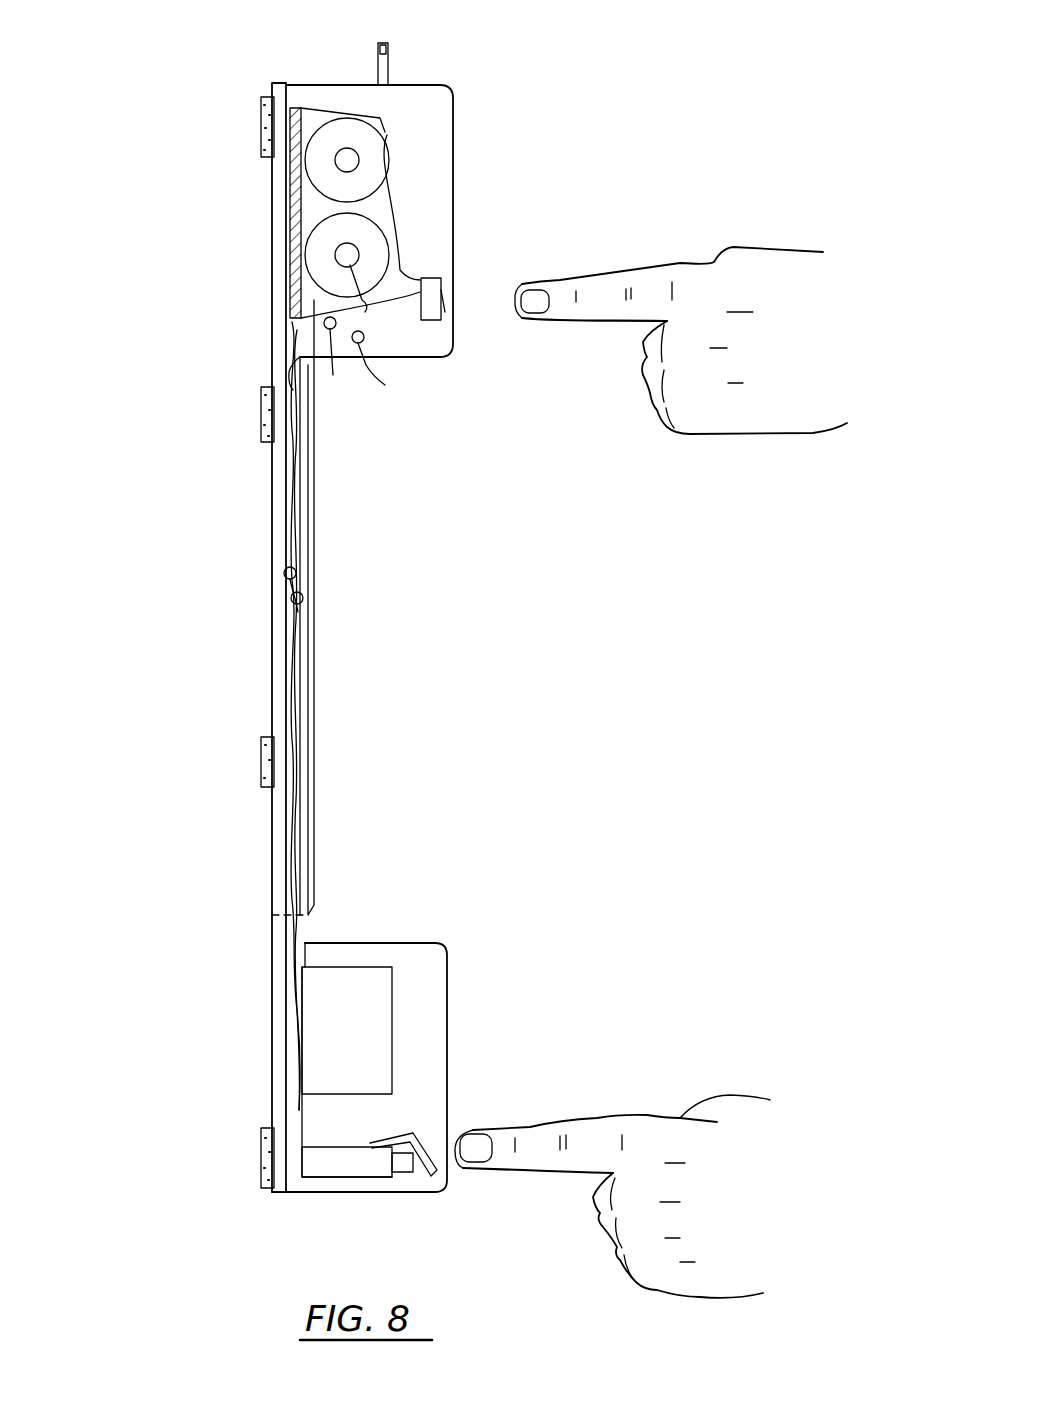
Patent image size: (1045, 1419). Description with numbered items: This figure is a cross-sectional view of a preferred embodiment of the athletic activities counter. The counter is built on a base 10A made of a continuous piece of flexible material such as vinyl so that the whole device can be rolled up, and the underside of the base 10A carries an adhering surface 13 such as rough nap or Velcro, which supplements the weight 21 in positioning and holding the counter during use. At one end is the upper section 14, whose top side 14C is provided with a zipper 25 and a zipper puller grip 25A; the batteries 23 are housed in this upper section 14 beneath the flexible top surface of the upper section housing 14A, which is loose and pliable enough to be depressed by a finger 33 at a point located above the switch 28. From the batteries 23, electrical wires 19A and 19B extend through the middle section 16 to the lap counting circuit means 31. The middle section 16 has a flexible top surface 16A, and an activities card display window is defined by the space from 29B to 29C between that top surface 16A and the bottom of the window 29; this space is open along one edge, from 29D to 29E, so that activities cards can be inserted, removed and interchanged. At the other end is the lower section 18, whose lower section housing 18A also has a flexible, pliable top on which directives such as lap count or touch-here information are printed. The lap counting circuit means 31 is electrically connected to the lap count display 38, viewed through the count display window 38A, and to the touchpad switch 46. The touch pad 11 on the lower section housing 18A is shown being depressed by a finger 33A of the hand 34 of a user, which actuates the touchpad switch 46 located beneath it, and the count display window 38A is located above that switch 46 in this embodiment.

The base 10A is at (277, 963).
The touch pad 11 is at (450, 1110).
The adhering surface 13 is at (262, 133).
The upper section 14 is at (250, 165).
The upper section housing 14A is at (468, 190).
The top side of the upper section 14C is at (293, 78).
The middle section 16 is at (272, 563).
The top surface of middle section 16A is at (315, 715).
The lower section 18 is at (272, 1010).
The lower section housing 18A is at (415, 940).
The electrical wire 19A is at (333, 330).
The electrical wire 19B is at (360, 343).
The weight 21 is at (295, 230).
The batteries 23 is at (375, 240).
The zipper 25 is at (380, 82).
The zipper puller grip 25A is at (390, 60).
The switch 28 is at (445, 292).
The window 29 is at (310, 778).
The space boundary 29B is at (318, 650).
The space boundary 29C is at (300, 650).
The edge end of opening 29D is at (305, 915).
The edge end of opening 29E is at (305, 425).
The lap counting circuit means 31 is at (283, 1070).
The finger 33 is at (563, 310).
The finger 33A is at (530, 1135).
The hand 34 is at (817, 412).
The lap count display 38 is at (380, 1030).
The count display window 38A is at (448, 1050).
The touchpad switch 46 is at (402, 1172).